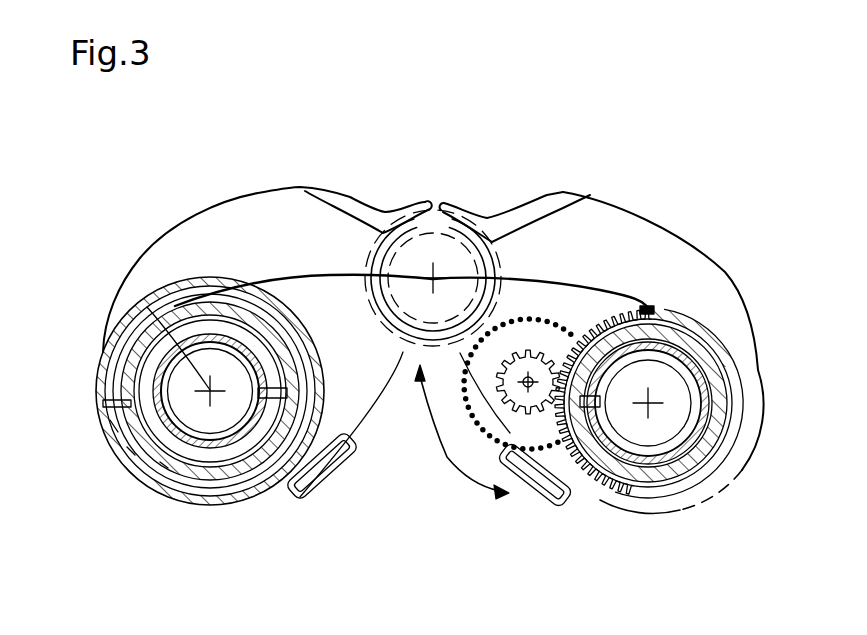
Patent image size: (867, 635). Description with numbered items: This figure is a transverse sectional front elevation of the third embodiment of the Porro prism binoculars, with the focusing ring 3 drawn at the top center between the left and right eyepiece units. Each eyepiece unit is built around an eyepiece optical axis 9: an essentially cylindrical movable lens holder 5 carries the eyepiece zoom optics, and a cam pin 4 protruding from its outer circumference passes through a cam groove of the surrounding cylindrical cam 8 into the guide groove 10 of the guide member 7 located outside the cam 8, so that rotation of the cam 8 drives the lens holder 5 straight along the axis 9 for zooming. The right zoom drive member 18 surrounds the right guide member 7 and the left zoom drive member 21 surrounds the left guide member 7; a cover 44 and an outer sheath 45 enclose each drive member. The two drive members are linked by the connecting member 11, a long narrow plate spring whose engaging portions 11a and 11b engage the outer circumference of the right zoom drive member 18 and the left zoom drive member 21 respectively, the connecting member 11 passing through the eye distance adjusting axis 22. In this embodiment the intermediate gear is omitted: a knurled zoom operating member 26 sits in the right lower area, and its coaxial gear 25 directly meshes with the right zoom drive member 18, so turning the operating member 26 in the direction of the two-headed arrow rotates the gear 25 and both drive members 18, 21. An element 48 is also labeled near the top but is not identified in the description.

The focusing ring 3 is at (455, 255).
The cam pin 4 is at (275, 463).
The movable lens holder 5 is at (245, 463).
The guide member 7 is at (220, 463).
The cam 8 is at (195, 463).
The eyepiece optical axis 9 is at (147, 307).
The guide groove 10 is at (290, 398).
The connecting member 11 is at (300, 275).
The engaging portion 11a is at (742, 377).
The engaging portion 11b is at (160, 462).
The right zoom drive member 18 is at (650, 300).
The left zoom drive member 21 is at (103, 405).
The eye distance adjusting axis 22 is at (430, 277).
The gear 25 is at (515, 420).
The zoom operating member 26 is at (478, 427).
The cover 44 is at (127, 447).
The outer sheath 45 is at (110, 425).
The sheet guide 48 is at (525, 205).